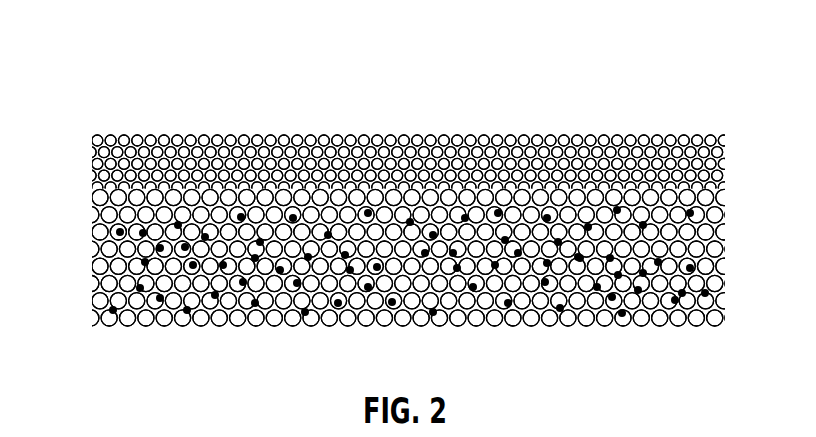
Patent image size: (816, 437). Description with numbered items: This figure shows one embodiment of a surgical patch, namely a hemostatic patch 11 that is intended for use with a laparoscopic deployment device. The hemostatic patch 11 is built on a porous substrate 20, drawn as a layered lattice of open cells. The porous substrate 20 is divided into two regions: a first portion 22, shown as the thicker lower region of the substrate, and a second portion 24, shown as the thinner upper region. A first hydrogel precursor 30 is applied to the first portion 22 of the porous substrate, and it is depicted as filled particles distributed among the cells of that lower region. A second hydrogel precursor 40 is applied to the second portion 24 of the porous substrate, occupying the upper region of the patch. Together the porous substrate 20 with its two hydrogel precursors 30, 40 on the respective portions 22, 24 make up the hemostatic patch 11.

The hemostatic patch 11 is at (230, 58).
The porous substrate 20 is at (726, 213).
The first portion 22 is at (75, 192).
The second portion 24 is at (75, 143).
The first hydrogel precursor 30 is at (615, 292).
The second hydrogel precursor 40 is at (719, 134).